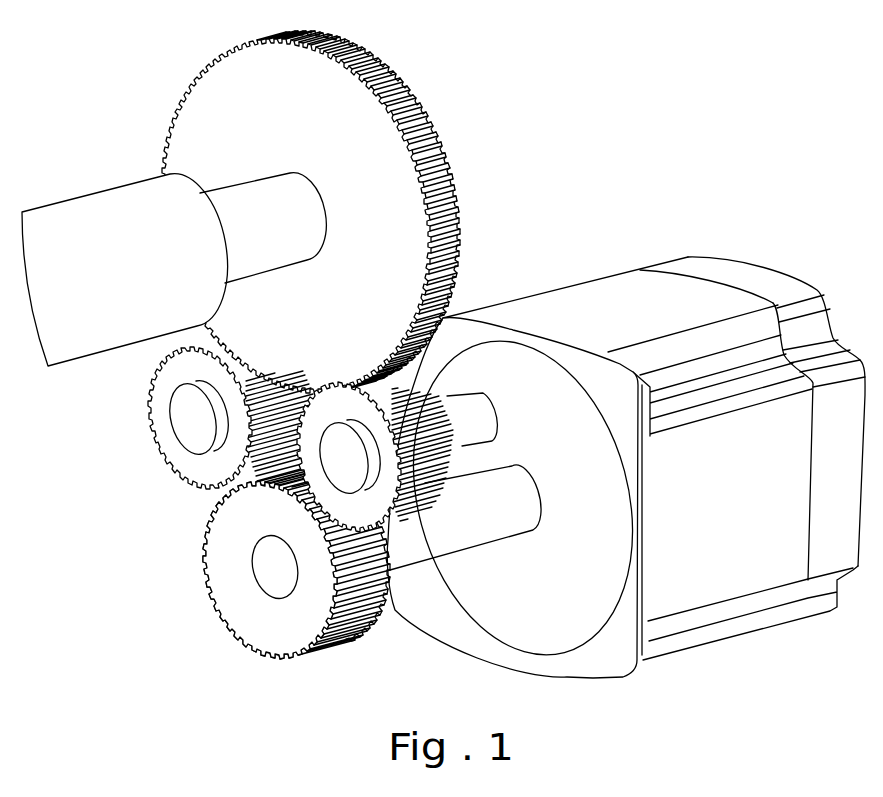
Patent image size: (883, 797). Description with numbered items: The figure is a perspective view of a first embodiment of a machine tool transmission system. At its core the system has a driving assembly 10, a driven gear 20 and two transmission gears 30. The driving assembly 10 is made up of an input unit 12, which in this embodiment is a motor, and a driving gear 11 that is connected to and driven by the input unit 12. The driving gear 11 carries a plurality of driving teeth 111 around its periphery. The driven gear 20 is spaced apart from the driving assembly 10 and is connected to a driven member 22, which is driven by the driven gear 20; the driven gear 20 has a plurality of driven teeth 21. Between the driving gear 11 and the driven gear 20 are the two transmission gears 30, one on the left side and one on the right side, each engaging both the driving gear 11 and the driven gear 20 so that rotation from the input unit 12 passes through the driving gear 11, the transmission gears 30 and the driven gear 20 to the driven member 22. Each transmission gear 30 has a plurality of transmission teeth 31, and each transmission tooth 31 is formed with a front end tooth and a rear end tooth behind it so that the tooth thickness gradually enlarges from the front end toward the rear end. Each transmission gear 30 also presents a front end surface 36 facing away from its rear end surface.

The driving assembly 10 is at (535, 505).
The driving gear 11 is at (296, 589).
The driving teeth 111 is at (337, 644).
The input unit 12 is at (477, 615).
The driven gear 20 is at (292, 210).
The driven teeth 21 is at (432, 129).
The driven member 22 is at (100, 210).
The transmission gears 30 is at (291, 475).
The transmission teeth 31 is at (455, 395).
The front end surface 36 is at (197, 466).